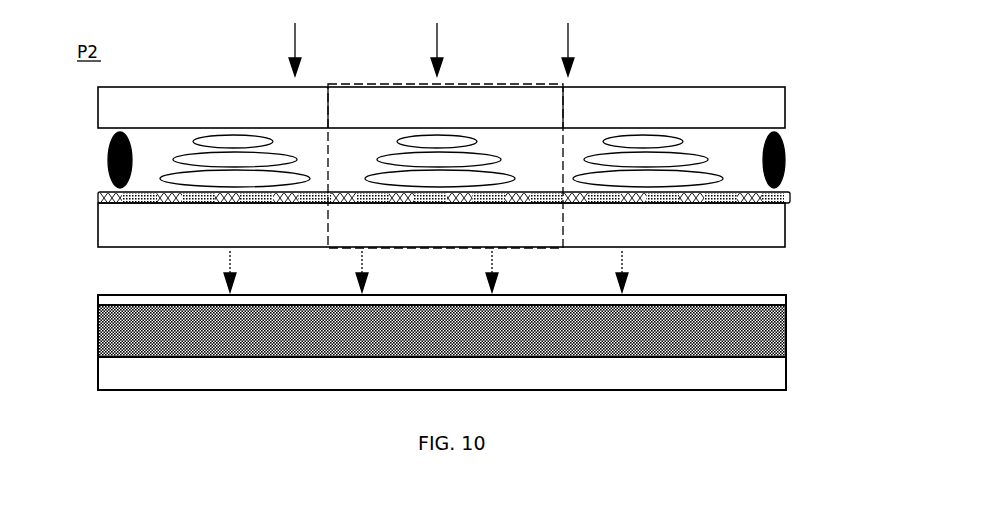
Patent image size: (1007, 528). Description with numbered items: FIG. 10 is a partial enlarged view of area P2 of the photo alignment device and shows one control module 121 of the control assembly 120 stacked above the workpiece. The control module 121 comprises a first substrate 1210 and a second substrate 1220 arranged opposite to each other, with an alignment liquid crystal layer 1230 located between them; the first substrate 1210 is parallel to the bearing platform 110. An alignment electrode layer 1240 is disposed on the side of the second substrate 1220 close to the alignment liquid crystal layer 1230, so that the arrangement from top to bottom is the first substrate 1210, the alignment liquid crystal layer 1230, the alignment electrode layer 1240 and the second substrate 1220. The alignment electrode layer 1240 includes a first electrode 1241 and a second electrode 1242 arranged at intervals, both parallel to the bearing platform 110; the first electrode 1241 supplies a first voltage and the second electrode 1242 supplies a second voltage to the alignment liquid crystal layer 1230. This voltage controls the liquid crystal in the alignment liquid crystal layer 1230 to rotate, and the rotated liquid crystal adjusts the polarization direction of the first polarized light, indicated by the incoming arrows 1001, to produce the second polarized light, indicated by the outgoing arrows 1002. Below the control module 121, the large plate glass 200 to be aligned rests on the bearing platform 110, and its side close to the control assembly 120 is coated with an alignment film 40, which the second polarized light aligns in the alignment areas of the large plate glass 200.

The control assembly 120 is at (487, 167).
The control module 121 is at (478, 84).
The incident light 1001 is at (568, 38).
The exit light 1002 is at (622, 265).
The first substrate 1210 is at (742, 110).
The second substrate 1220 is at (492, 225).
The alignment liquid crystal layer 1230 is at (703, 157).
The alignment electrode layer 1240 is at (458, 208).
The first electrode 1241 is at (100, 197).
The second electrode 1242 is at (138, 203).
The alignment film 40 is at (763, 302).
The large plate glass to be aligned 200 is at (765, 331).
The bearing platform 110 is at (742, 376).